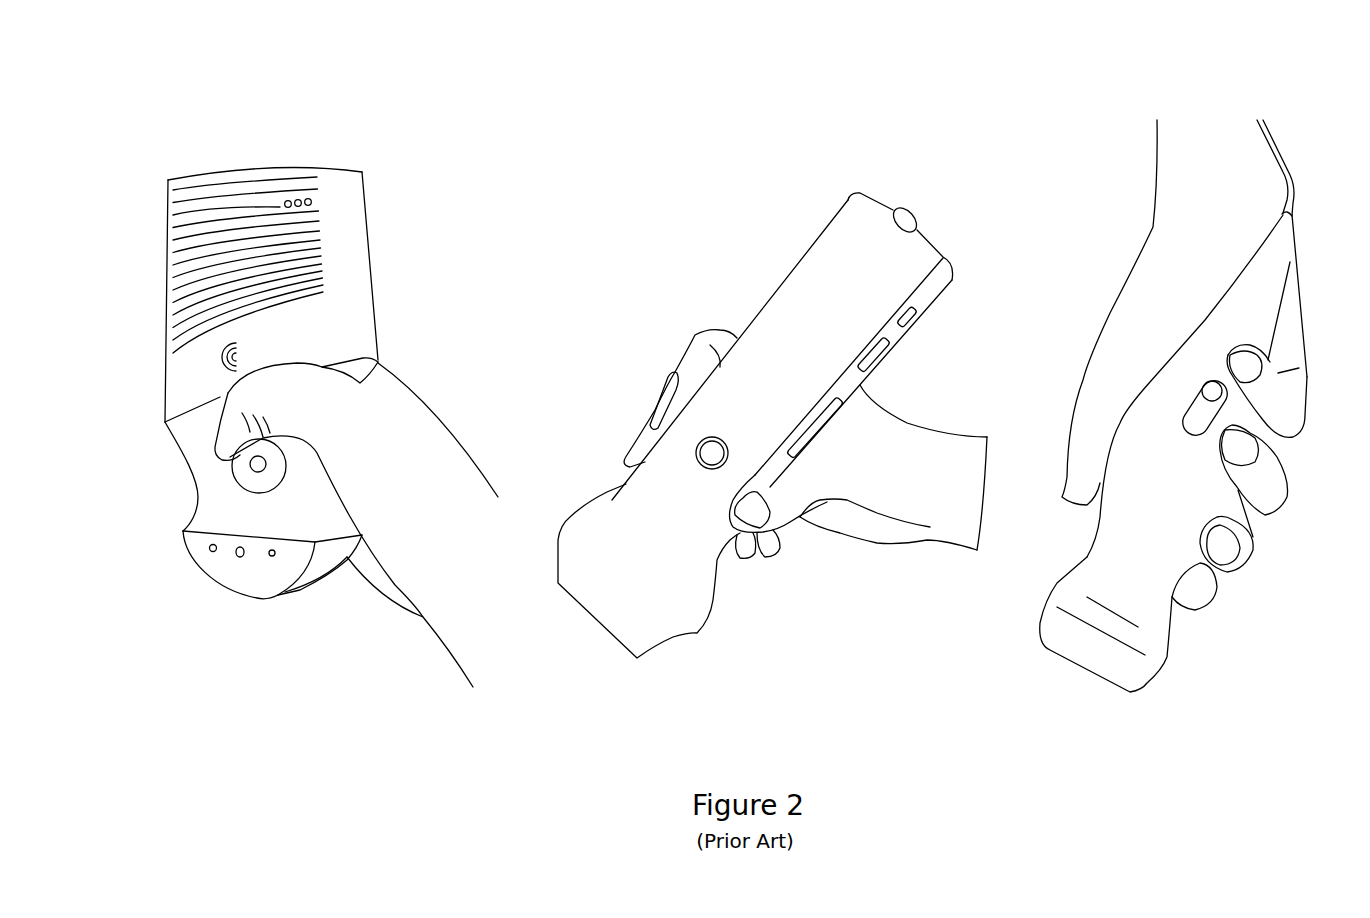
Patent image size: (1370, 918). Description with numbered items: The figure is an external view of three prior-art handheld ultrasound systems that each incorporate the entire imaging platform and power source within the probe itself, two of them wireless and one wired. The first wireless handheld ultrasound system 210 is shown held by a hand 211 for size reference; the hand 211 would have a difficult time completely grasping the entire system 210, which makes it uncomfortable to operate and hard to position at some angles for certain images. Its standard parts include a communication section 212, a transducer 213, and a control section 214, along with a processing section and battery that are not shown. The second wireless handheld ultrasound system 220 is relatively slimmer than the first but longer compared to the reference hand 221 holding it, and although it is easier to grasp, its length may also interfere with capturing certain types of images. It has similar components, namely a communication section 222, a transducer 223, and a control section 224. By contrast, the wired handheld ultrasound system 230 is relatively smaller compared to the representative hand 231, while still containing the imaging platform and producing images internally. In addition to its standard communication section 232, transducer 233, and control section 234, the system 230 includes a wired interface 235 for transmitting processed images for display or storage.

The wireless handheld ultrasound system 210 is at (282, 148).
The hand 211 is at (416, 381).
The communication section 212 is at (370, 290).
The transducer 213 is at (230, 604).
The control section 214 is at (228, 461).
The second wireless handheld ultrasound system 220 is at (866, 171).
The hand 221 is at (910, 405).
The communication section 222 is at (793, 264).
The transducer 223 is at (610, 656).
The control section 224 is at (699, 464).
The wired handheld ultrasound system 230 is at (1206, 92).
The hand 231 is at (1154, 242).
The communication section 232 is at (1171, 349).
The transducer 233 is at (1085, 673).
The control section 234 is at (1186, 440).
The wired interface 235 is at (1284, 141).